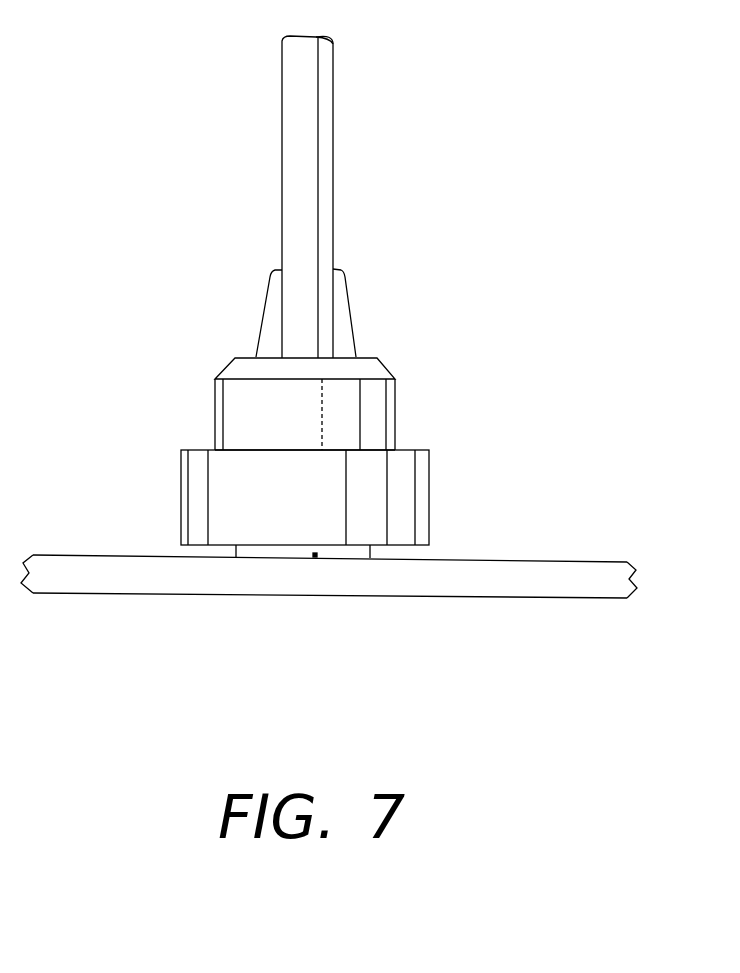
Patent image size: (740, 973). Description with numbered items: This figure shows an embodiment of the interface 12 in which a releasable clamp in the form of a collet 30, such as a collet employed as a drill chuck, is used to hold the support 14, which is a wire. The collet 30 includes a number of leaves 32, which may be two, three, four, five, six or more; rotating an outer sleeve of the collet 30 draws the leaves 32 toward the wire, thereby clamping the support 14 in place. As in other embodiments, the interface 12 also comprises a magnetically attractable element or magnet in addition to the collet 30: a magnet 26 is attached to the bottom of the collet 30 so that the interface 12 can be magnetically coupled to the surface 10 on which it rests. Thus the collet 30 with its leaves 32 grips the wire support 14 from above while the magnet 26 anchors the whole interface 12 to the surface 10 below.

The surface 10 is at (503, 559).
The interface 12 is at (168, 388).
The support 14 is at (333, 90).
The magnet 26 is at (313, 558).
The collet 30 is at (397, 383).
The leaves 32 is at (271, 272).